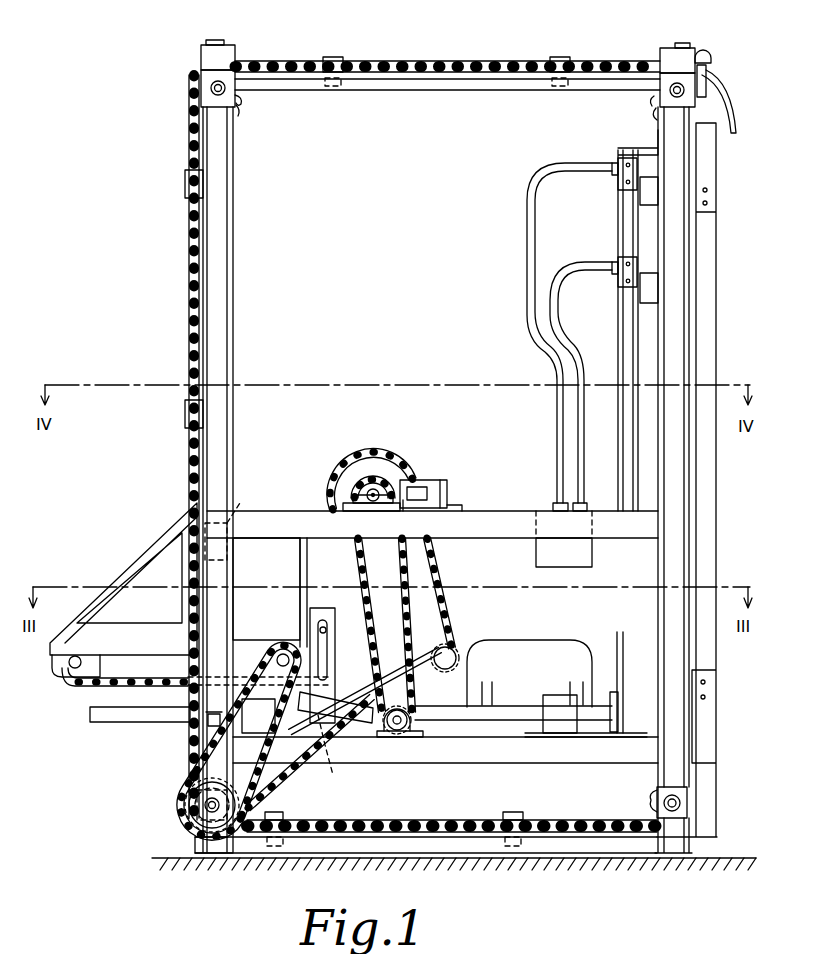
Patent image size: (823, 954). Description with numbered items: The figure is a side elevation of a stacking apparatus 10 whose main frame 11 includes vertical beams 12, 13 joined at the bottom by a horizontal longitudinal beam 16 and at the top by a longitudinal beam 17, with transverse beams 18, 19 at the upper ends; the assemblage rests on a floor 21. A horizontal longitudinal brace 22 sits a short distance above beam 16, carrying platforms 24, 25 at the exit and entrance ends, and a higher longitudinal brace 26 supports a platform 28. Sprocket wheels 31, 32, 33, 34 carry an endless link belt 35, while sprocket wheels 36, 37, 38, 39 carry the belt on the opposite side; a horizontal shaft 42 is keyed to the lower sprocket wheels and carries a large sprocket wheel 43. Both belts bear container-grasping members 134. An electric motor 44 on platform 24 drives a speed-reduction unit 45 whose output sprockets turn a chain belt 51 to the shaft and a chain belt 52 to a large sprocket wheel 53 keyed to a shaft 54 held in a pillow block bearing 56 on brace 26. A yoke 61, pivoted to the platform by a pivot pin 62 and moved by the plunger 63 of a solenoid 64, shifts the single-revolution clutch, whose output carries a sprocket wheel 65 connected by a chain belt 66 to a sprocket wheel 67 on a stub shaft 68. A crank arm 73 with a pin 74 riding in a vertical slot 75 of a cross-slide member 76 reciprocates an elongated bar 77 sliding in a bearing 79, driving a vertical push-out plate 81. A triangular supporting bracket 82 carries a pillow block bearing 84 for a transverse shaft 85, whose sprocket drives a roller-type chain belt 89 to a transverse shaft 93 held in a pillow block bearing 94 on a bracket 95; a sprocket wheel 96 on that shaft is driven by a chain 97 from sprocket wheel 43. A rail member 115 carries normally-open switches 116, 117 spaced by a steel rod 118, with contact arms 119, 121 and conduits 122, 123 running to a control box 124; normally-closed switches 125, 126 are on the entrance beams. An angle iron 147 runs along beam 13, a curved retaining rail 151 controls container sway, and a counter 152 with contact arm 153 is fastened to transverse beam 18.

The stacking apparatus 10 is at (384, 58).
The main frame 11 is at (620, 60).
The vertical beam 12 is at (205, 240).
The vertical beam 13 is at (690, 243).
The horizontal longitudinal beam 16 is at (414, 836).
The longitudinal beam 17 is at (580, 78).
The transverse beam 18 is at (687, 43).
The transverse beam 19 is at (210, 40).
The floor 21 is at (735, 850).
The horizontal longitudinal brace 22 is at (549, 764).
The platform 24 is at (584, 740).
The platform 25 is at (252, 733).
The longitudinal brace 26 is at (281, 522).
The platform 28 is at (455, 506).
The sprocket wheel 31 is at (239, 110).
The sprocket wheel 32 is at (655, 108).
The sprocket wheel 33 is at (182, 790).
The sprocket wheel 34 is at (652, 796).
The link belt 35 is at (190, 295).
The sprocket wheel 36 is at (242, 100).
The sprocket wheel 37 is at (652, 98).
The sprocket wheel 38 is at (650, 808).
The sprocket wheel 39 is at (178, 800).
The horizontal shaft 42 is at (198, 810).
The large sprocket wheel 43 is at (205, 808).
The electric motor 44 is at (542, 638).
The speed-reduction unit 45 is at (452, 650).
The chain belt 51 is at (392, 675).
The chain belt 52 is at (445, 560).
The large sprocket wheel 53 is at (366, 450).
The shaft 54 is at (373, 502).
The pillow block bearing 56 is at (352, 507).
The yoke 61 is at (412, 486).
The pivot pin 62 is at (406, 505).
The plunger 63 is at (430, 480).
The solenoid 64 is at (445, 482).
The sprocket wheel 65 is at (356, 475).
The chain belt 66 is at (356, 575).
The sprocket wheel 67 is at (382, 730).
The stub shaft 68 is at (398, 726).
The crank arm 73 is at (318, 722).
The pin 74 is at (330, 760).
The slot 75 is at (326, 628).
The cross-slide member 76 is at (326, 656).
The elongated bar 77 is at (516, 700).
The bearing 79 is at (556, 695).
The push-out plate 81 is at (620, 702).
The triangular supporting bracket 82 is at (140, 565).
The pillow block bearing 84 is at (78, 690).
The horizontal transverse shaft 85 is at (68, 675).
The roller-type chain belt 89 is at (118, 722).
The transverse shaft 93 is at (284, 652).
The pillow block bearing 94 is at (256, 650).
The bracket 95 is at (242, 640).
The sprocket wheel 96 is at (328, 672).
The chain 97 is at (280, 782).
The rail member 115 is at (618, 332).
The normally-open switch 116 is at (616, 178).
The normally-open switch 117 is at (616, 262).
The steel rod 118 is at (618, 216).
The contact arm 119 is at (660, 178).
The contact arm 121 is at (660, 298).
The conduit 122 is at (527, 218).
The conduit 123 is at (566, 283).
The control box 124 is at (592, 558).
The normally-closed switch 125 is at (232, 519).
The normally-closed switch 126 is at (238, 500).
The container-grasping member 134 is at (333, 88).
The angle iron 147 is at (710, 339).
The curved retaining rail 151 is at (736, 118).
The counter 152 is at (706, 58).
The contact arm 153 is at (706, 70).